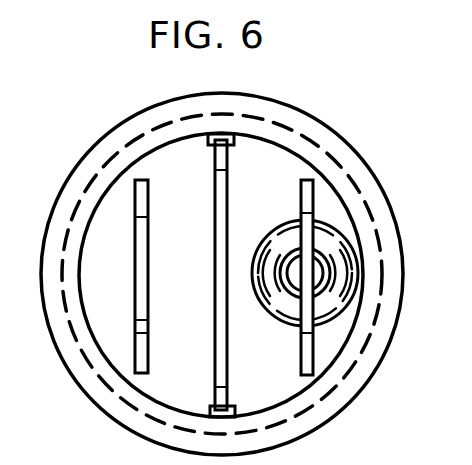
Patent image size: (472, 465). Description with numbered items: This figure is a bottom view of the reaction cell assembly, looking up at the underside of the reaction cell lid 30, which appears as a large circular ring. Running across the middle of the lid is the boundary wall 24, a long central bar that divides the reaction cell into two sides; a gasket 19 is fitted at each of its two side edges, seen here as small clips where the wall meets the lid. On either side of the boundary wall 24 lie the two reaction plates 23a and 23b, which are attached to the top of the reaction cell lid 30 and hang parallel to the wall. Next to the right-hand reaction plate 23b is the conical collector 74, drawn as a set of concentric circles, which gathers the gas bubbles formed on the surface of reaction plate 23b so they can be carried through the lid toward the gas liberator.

The reaction cell lid 30 is at (283, 122).
The boundary wall 24 is at (215, 211).
The gasket 19 is at (234, 138).
The reaction plate 23a is at (180, 307).
The reaction plate 23b is at (301, 360).
The conical collector 74 is at (268, 262).